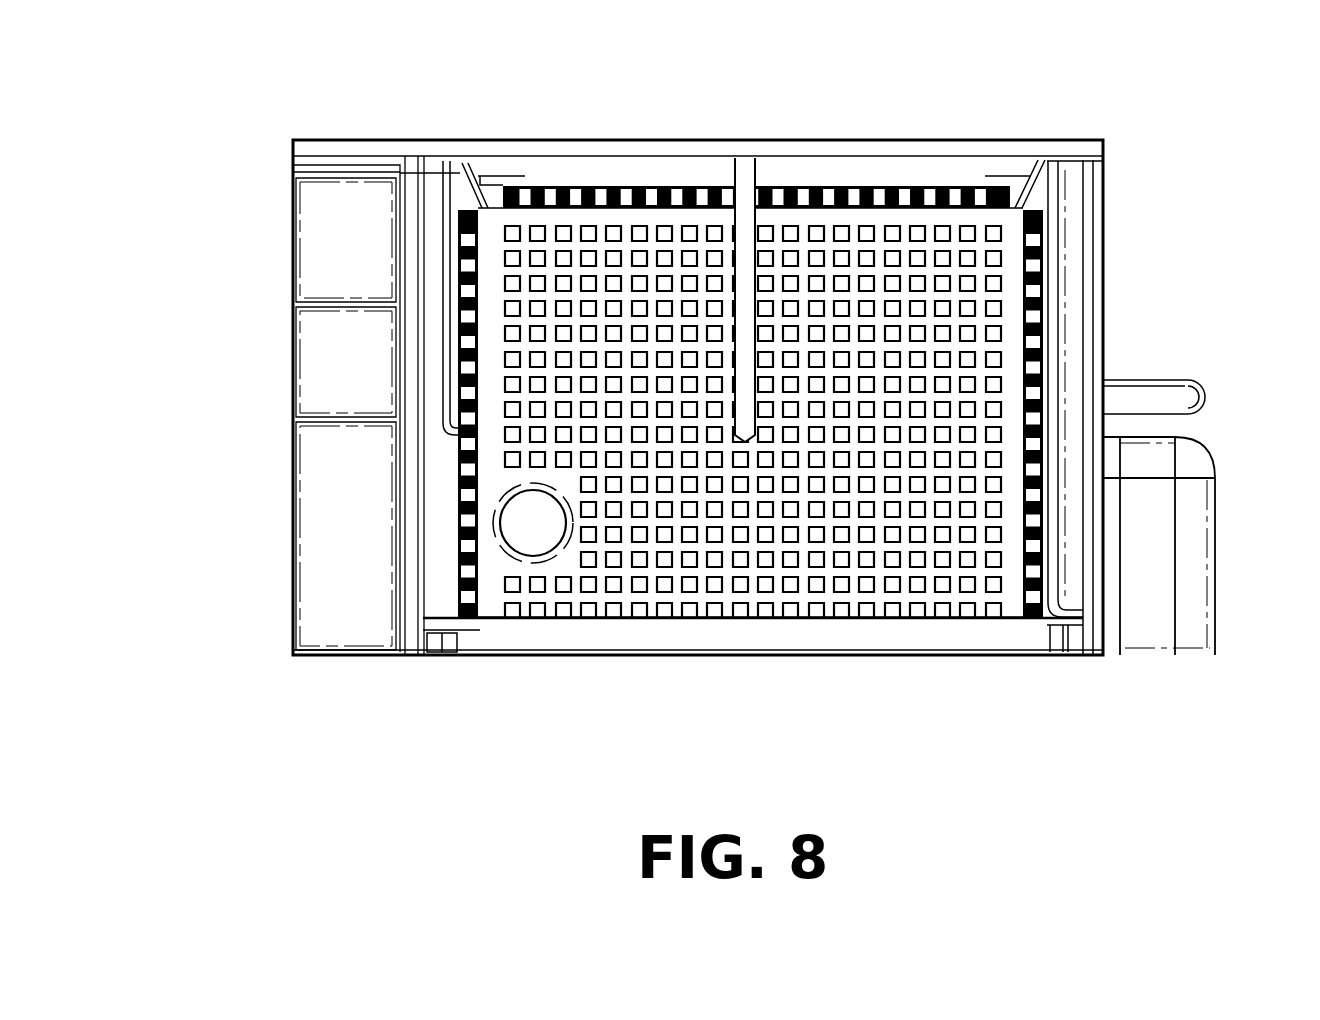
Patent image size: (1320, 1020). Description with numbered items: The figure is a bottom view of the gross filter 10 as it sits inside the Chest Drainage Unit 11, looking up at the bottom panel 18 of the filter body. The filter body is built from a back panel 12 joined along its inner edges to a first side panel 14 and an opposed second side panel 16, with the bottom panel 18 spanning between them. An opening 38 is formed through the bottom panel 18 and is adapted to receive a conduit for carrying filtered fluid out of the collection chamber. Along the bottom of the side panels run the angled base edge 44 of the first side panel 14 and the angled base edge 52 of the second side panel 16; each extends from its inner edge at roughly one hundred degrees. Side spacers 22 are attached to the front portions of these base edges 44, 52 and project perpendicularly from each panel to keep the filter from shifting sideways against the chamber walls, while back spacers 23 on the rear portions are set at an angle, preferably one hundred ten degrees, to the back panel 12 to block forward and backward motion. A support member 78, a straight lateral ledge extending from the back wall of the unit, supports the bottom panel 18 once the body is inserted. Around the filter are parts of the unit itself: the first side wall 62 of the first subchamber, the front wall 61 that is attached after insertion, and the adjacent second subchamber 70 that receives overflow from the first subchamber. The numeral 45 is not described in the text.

The gross filter 10 is at (607, 183).
The Chest Drainage Unit 11 is at (1130, 152).
The back panel 12 is at (927, 185).
The first side panel 14 is at (1045, 318).
The second side panel 16 is at (457, 512).
The bottom panel 18 is at (728, 595).
The side spacers 22 is at (452, 627).
The back spacers 23 is at (485, 165).
The opening 38 is at (533, 526).
The angled base edge 44 is at (1045, 383).
The bottom rail 45 is at (823, 620).
The angled base edge 52 is at (457, 392).
The front wall 61 is at (935, 648).
The first side wall 62 is at (1105, 228).
The second subchamber 70 is at (345, 238).
The support member 78 is at (745, 200).